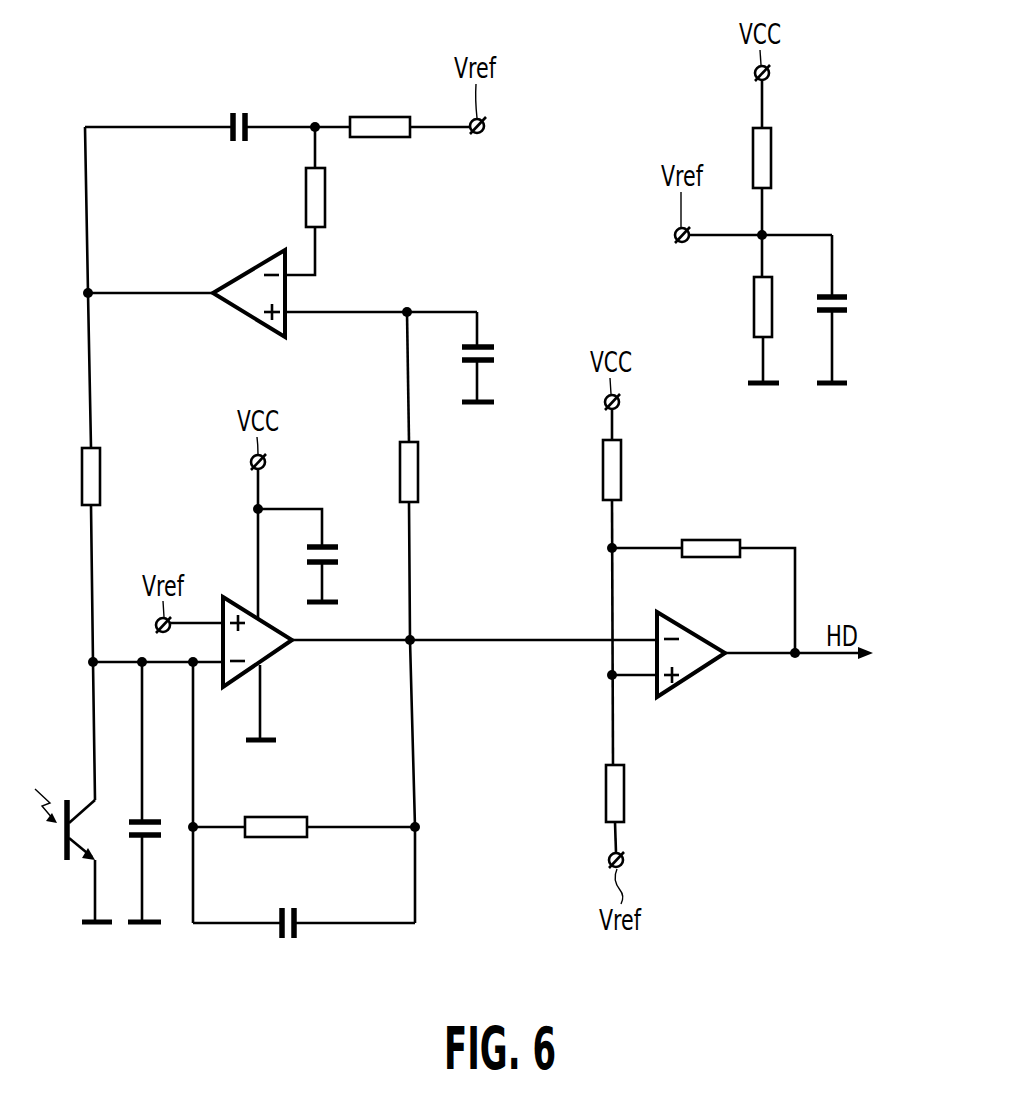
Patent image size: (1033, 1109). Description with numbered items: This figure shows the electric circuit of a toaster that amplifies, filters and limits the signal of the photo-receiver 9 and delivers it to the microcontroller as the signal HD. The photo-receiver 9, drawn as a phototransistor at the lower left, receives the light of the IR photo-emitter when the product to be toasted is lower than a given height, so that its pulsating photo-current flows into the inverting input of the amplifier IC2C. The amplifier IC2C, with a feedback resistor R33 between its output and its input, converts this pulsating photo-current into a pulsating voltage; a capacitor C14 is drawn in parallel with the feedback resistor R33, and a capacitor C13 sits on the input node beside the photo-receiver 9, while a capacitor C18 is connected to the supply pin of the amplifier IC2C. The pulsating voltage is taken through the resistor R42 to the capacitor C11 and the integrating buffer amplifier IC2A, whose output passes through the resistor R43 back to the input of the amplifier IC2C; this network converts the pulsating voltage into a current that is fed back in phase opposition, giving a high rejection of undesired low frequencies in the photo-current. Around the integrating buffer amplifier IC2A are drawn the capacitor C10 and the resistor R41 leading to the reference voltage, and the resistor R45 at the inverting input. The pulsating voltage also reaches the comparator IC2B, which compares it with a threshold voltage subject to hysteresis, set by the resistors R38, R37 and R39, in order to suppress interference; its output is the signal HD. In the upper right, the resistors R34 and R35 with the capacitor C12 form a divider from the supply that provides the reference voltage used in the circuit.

The capacitor C10 is at (238, 112).
The resistor R41 is at (383, 116).
The resistor R45 is at (326, 203).
The integrating buffer amplifier IC2A is at (251, 286).
The capacitor C11 is at (495, 354).
The resistor R43 is at (101, 477).
The resistor R42 is at (419, 472).
The capacitor C18 is at (339, 553).
The amplifier IC2C is at (257, 647).
The photo-receiver 9 is at (65, 800).
The capacitor C13 is at (162, 826).
The feedback resistor R33 is at (288, 816).
The capacitor C14 is at (286, 939).
The resistor R38 is at (622, 470).
The resistor R39 is at (722, 539).
The resistor R37 is at (626, 792).
The comparator IC2B is at (690, 665).
The resistor R34 is at (772, 155).
The resistor R35 is at (753, 307).
The capacitor C12 is at (848, 303).